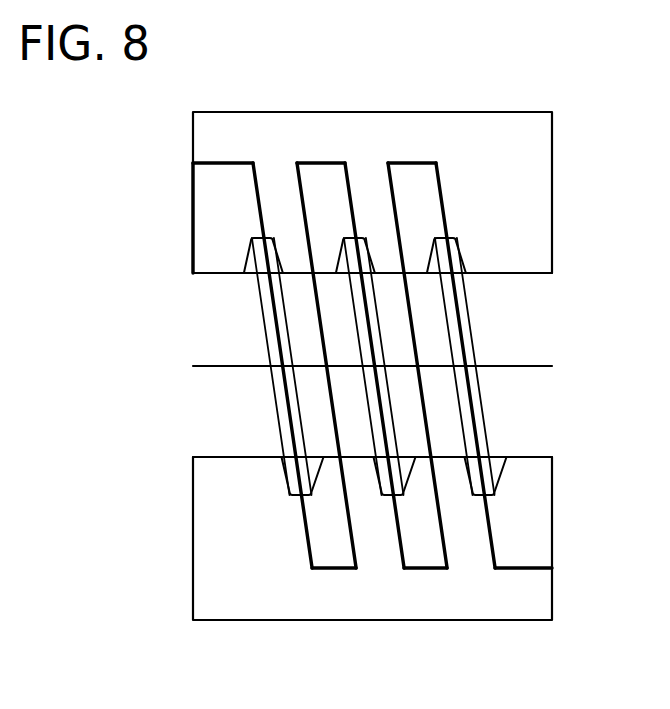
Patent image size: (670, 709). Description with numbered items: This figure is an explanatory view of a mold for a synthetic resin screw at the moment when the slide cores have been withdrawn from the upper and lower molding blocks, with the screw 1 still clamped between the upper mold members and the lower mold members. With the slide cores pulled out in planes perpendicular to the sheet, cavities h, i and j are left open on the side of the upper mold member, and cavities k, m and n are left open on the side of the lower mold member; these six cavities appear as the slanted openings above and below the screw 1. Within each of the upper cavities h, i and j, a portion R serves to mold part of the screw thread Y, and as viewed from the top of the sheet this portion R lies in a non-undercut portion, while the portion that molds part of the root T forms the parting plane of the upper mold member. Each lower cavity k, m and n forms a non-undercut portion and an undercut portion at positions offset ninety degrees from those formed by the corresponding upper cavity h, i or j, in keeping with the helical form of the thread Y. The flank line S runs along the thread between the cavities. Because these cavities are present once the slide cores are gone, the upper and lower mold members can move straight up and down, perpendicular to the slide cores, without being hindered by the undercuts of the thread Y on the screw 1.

The screw 1 is at (215, 307).
The cavity h is at (212, 205).
The root T is at (215, 408).
The portion R is at (284, 292).
The thread flank S is at (298, 302).
The cavity i is at (330, 178).
The cavity j is at (415, 175).
The cavity k is at (333, 558).
The cavity m is at (425, 553).
The cavity n is at (513, 553).
The screw thread Y is at (288, 478).